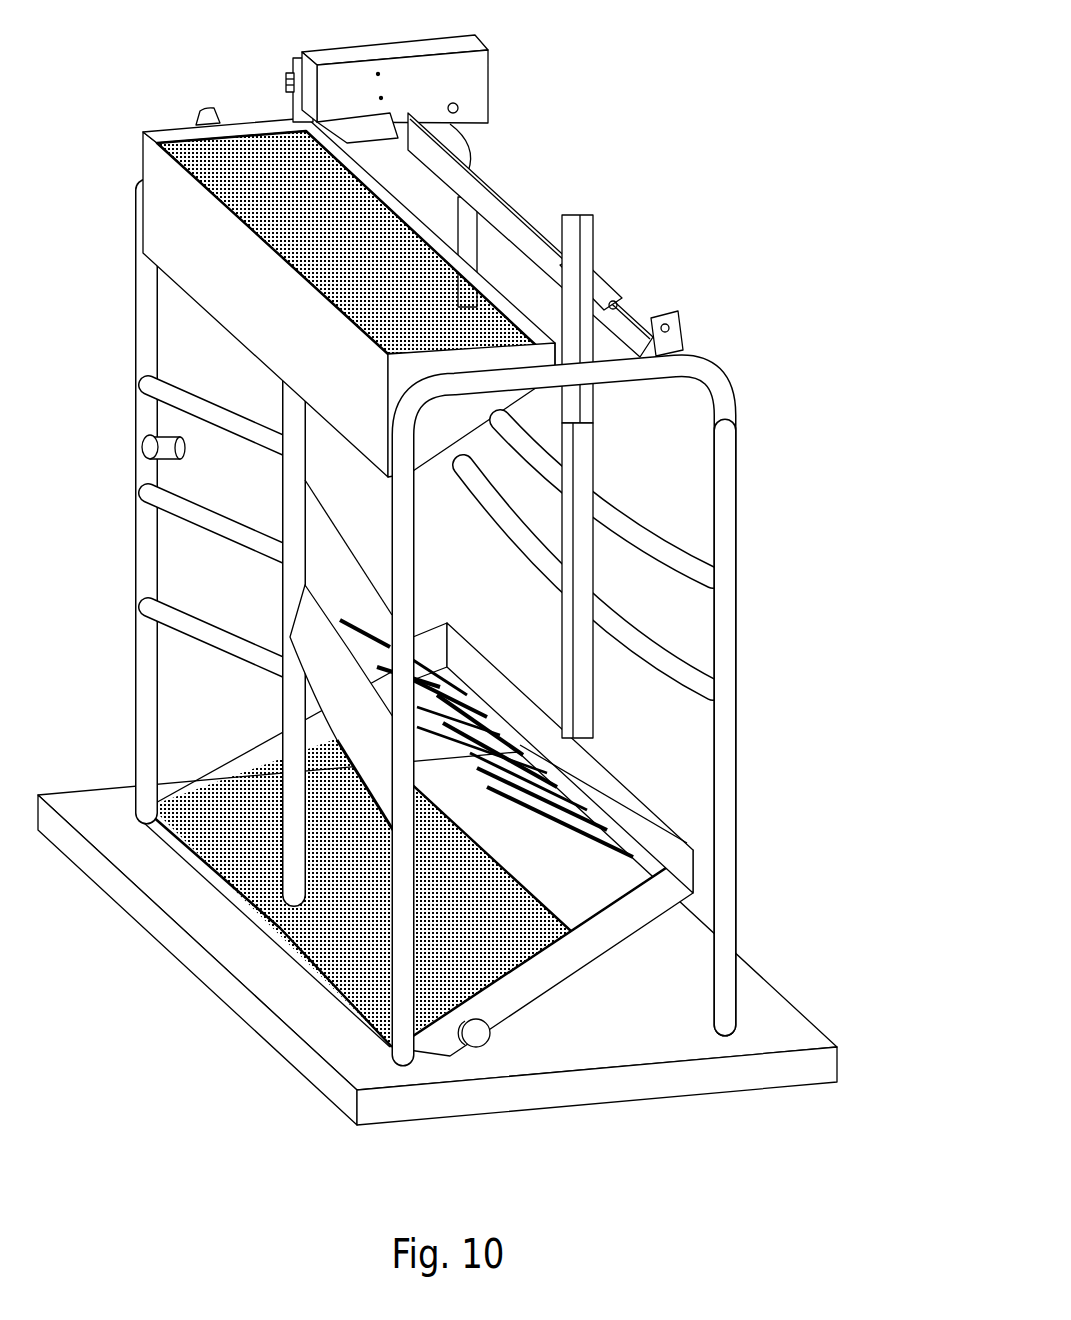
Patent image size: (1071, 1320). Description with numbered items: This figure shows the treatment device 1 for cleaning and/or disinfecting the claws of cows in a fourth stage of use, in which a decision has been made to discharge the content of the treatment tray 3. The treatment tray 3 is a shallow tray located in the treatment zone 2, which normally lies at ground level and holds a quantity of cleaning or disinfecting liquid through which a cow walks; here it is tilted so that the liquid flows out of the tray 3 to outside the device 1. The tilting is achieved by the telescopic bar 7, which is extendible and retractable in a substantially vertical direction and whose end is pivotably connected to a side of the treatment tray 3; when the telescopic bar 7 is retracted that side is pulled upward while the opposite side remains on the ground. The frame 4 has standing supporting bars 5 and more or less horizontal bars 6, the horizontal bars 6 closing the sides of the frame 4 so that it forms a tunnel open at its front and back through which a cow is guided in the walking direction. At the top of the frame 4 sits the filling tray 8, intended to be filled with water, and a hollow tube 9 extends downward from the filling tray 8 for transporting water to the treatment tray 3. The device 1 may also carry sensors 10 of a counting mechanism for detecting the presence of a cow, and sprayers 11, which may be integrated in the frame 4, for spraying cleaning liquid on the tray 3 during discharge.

The treatment device 1 is at (436, 585).
The treatment zone 2 is at (683, 808).
The treatment tray 3 is at (571, 953).
The frame 4 is at (712, 378).
The standing supporting bars 5 is at (723, 485).
The horizontal bars 6 is at (677, 557).
The telescopic bar 7 is at (582, 212).
The filling tray 8 is at (246, 135).
The hollow tube 9 is at (297, 425).
The sensors 10 is at (147, 453).
The sprayers 11 is at (355, 652).